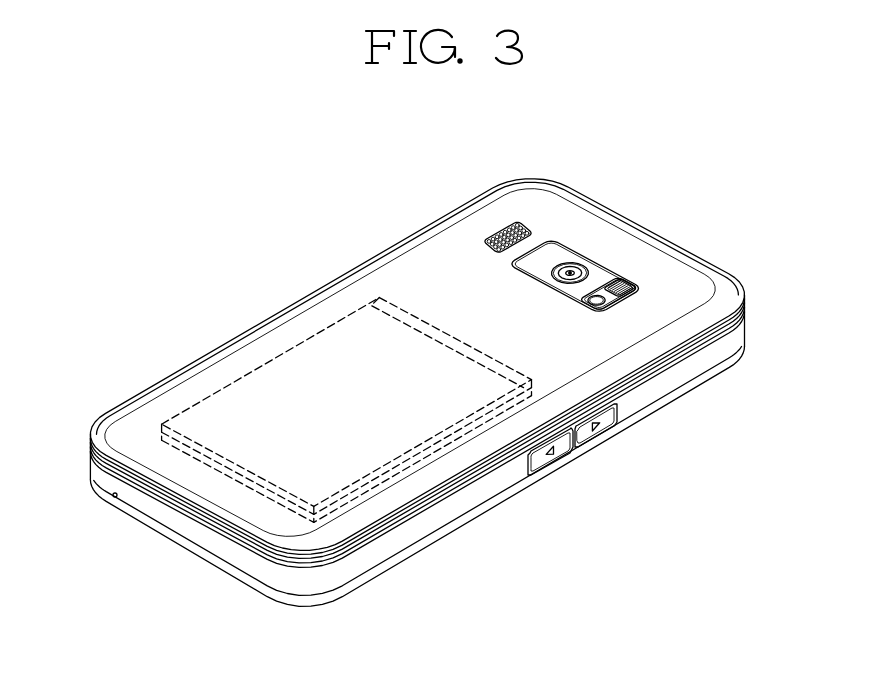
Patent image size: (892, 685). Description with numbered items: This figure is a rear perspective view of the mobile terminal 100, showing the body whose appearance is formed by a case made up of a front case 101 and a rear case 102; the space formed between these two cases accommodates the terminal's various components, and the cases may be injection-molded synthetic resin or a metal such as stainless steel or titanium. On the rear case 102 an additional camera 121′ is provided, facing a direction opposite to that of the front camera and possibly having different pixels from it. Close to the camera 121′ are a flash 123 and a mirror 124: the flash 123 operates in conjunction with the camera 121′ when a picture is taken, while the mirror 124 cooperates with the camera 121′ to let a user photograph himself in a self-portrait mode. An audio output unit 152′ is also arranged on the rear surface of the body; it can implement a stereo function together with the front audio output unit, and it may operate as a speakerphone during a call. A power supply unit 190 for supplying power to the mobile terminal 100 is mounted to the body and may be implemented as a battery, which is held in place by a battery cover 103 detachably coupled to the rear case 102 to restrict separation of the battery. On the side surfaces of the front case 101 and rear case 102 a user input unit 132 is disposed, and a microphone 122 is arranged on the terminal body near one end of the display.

The mobile terminal 100 is at (375, 226).
The front case 101 is at (735, 345).
The rear case 102 is at (745, 318).
The battery cover 103 is at (215, 372).
The power supply unit 190 is at (347, 330).
The audio output unit 152′ is at (520, 229).
The camera 121′ is at (569, 273).
The flash 123 is at (628, 281).
The mirror 124 is at (598, 297).
The user input unit 132 is at (552, 460).
The microphone 122 is at (113, 497).